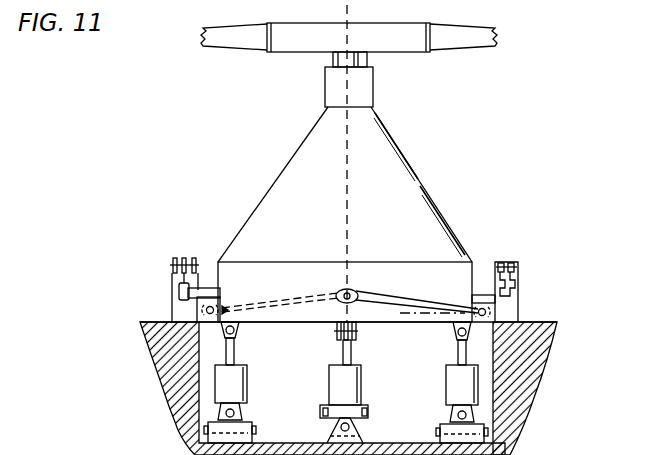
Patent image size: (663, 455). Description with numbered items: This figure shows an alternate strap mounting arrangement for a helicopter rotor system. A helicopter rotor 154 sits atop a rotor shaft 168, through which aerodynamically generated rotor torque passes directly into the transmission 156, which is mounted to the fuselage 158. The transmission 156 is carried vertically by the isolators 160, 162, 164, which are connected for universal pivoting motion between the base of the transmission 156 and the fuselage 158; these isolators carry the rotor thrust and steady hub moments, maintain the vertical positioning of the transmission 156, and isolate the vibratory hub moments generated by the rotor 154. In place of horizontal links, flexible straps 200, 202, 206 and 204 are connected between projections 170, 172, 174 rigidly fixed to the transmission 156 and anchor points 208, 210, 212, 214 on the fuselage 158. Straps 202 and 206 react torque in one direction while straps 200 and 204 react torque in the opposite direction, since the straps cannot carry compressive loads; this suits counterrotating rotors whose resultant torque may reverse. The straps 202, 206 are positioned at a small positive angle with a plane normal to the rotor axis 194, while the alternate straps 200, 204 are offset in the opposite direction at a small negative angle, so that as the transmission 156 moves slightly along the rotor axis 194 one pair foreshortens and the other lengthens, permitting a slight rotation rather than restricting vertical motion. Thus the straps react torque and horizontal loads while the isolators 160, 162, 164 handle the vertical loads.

The helicopter rotor 154 is at (416, 48).
The rotor shaft 168 is at (333, 58).
The transmission 156 is at (305, 152).
The rotor axis 194 is at (347, 201).
The projection 172 is at (344, 288).
The flexible strap 202 is at (416, 329).
The flexible strap 206 is at (265, 302).
The projection 170 is at (204, 291).
The anchor point 208 is at (172, 265).
The flexible strap 200 is at (180, 290).
The anchor point 214 is at (205, 311).
The projection 174 is at (483, 295).
The anchor point 212 is at (520, 267).
The flexible strap 204 is at (520, 283).
The anchor point 210 is at (496, 312).
The fuselage 158 is at (528, 366).
The isolator 160 is at (234, 385).
The isolator 162 is at (354, 387).
The isolator 164 is at (472, 388).